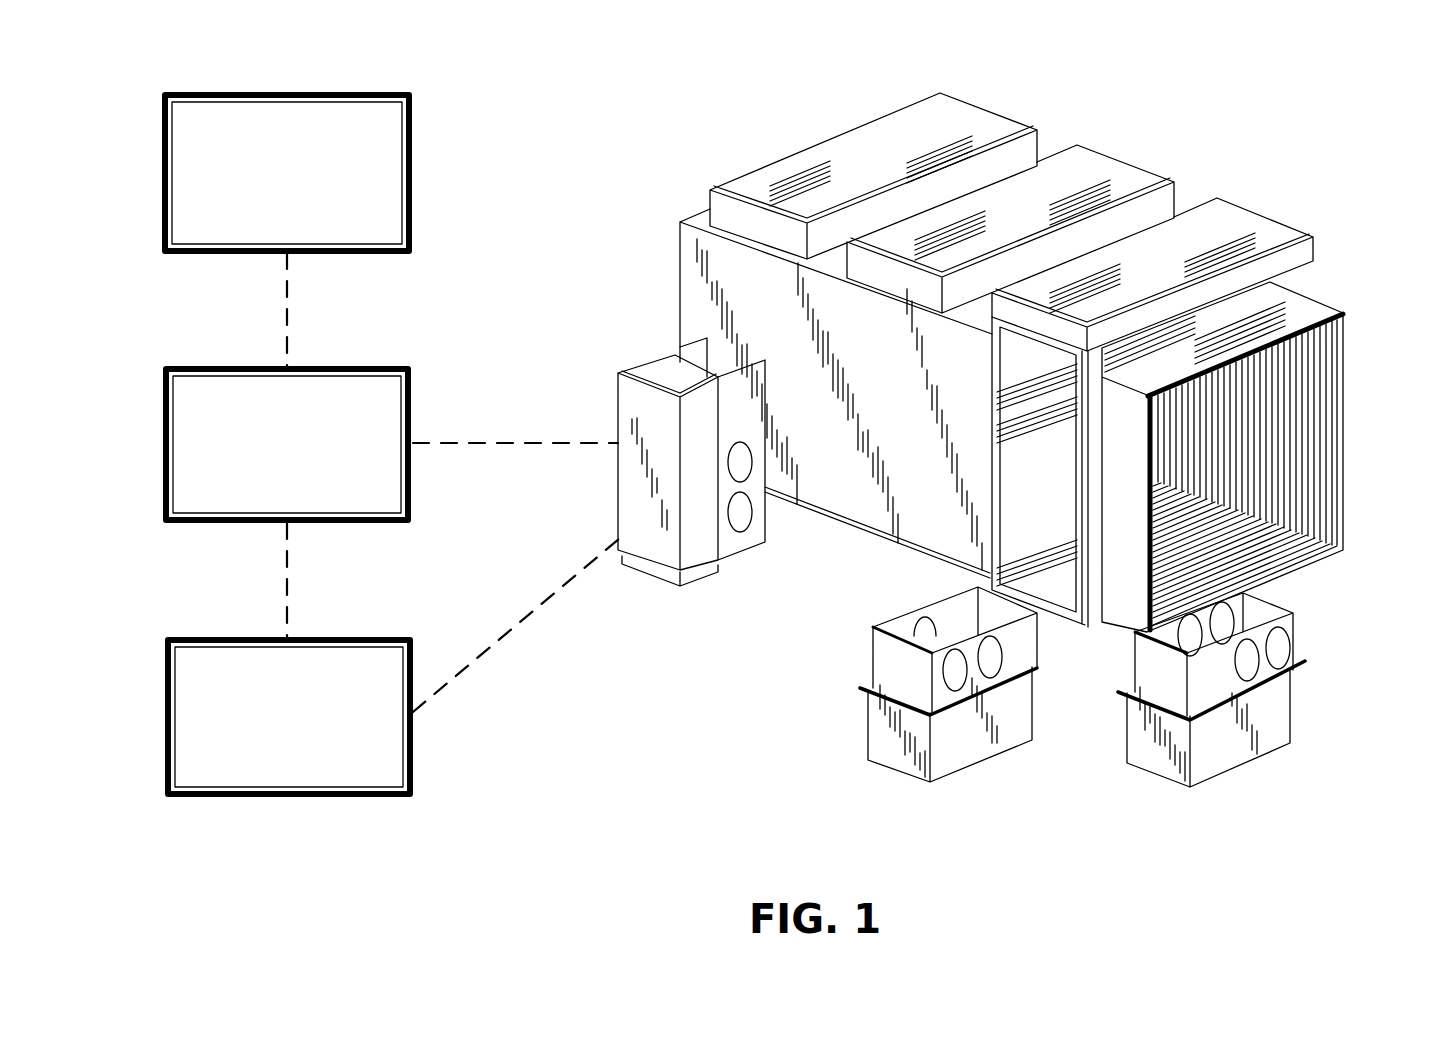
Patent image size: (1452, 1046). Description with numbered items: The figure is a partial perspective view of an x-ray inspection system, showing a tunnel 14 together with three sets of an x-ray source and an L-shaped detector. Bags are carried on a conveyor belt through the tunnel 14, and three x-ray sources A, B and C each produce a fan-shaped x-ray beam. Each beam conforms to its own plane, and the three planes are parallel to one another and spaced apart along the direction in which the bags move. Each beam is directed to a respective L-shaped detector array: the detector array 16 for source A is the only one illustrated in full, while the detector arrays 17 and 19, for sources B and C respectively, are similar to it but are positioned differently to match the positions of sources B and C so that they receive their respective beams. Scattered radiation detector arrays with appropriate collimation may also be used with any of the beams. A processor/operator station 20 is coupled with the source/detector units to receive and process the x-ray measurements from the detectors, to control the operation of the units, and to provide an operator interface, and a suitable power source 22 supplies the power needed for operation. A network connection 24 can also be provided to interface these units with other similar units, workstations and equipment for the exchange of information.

The tunnel 14 is at (1348, 400).
The detector array 16 is at (1264, 212).
The detector array 17 is at (1125, 158).
The detector array 19 is at (985, 110).
The processor/operator station 20 is at (368, 366).
The power source 22 is at (368, 637).
The network connection 24 is at (368, 93).
The x-ray source A is at (1295, 702).
The x-ray source B is at (980, 763).
The x-ray source C is at (660, 582).